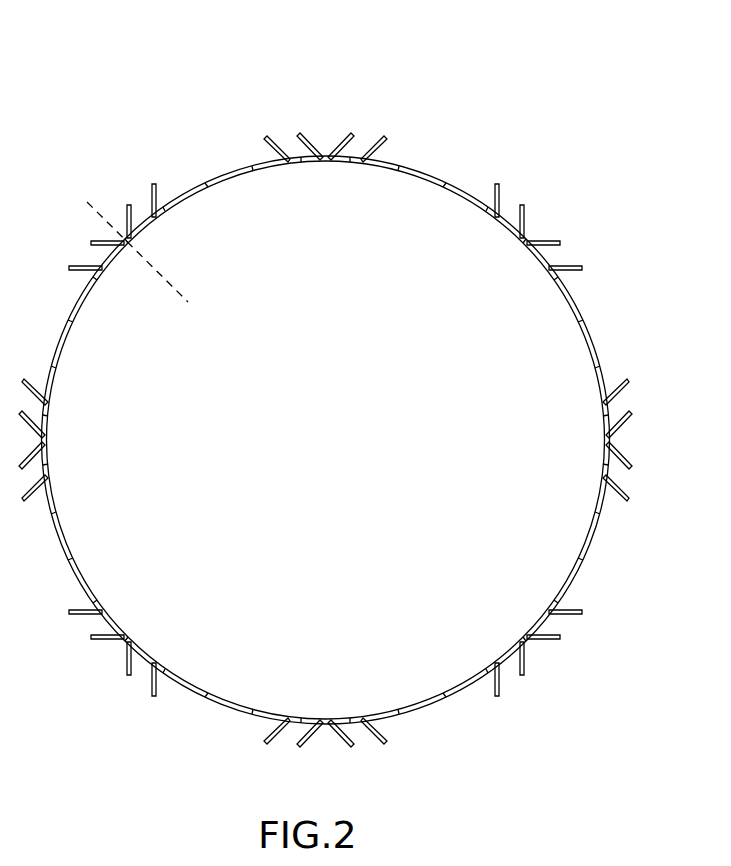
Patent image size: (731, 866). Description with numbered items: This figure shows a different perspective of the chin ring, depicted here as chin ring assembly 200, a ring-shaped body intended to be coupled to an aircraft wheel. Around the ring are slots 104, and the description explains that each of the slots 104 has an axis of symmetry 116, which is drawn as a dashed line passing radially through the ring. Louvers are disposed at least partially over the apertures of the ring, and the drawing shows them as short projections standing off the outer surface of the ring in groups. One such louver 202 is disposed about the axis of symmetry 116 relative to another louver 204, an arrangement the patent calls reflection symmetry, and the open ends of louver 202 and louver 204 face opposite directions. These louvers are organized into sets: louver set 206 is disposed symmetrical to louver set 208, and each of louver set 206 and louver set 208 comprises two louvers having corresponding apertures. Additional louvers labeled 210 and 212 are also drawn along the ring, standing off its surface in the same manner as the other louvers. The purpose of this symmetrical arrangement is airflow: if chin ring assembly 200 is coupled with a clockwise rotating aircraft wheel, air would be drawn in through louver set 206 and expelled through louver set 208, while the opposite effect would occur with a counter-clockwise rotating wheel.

The chin ring assembly 200 is at (126, 102).
The slots 104 is at (326, 156).
The louver 202 is at (300, 134).
The louver 204 is at (352, 134).
The louver set 206 is at (265, 174).
The louver set 208 is at (330, 174).
The vertical projection 210 is at (518, 217).
The horizontal projection 212 is at (548, 252).
The axis of symmetry 116 is at (170, 288).